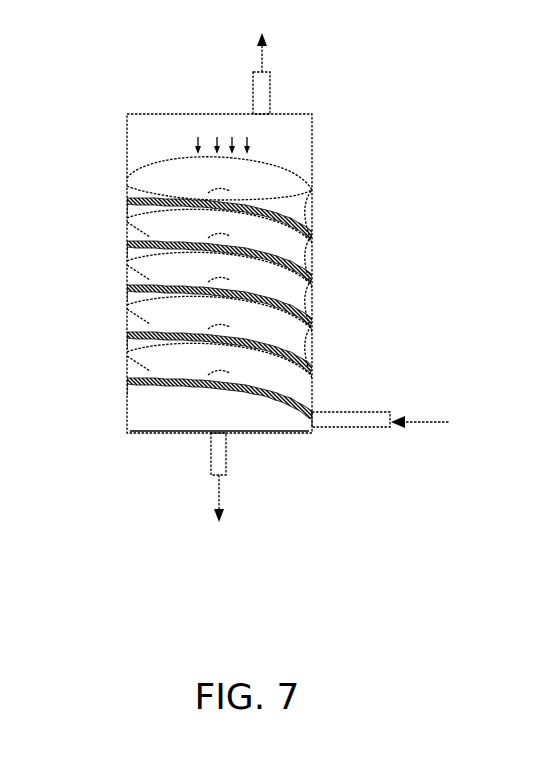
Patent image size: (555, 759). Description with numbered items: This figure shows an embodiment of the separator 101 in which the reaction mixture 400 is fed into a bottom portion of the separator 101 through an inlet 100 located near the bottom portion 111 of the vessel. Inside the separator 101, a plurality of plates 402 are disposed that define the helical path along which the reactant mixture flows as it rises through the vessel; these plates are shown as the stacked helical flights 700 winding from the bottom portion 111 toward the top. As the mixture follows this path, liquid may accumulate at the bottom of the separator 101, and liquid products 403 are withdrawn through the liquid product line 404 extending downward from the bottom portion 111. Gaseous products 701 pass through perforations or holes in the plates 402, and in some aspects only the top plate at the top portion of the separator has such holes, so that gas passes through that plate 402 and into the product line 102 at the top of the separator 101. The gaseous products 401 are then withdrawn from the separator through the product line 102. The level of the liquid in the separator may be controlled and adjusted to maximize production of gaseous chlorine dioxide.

The inlet pipe 100 is at (350, 412).
The separator 101 is at (127, 267).
The product line 102 is at (253, 86).
The bottom portion 111 is at (145, 418).
The reaction mixture 400 is at (405, 424).
The gaseous products 401 is at (263, 54).
The plates 402 is at (312, 176).
The liquid products 403 is at (215, 484).
The liquid product line 404 is at (226, 458).
The helical screw flight 700 is at (128, 377).
The gaseous products 701 is at (217, 140).